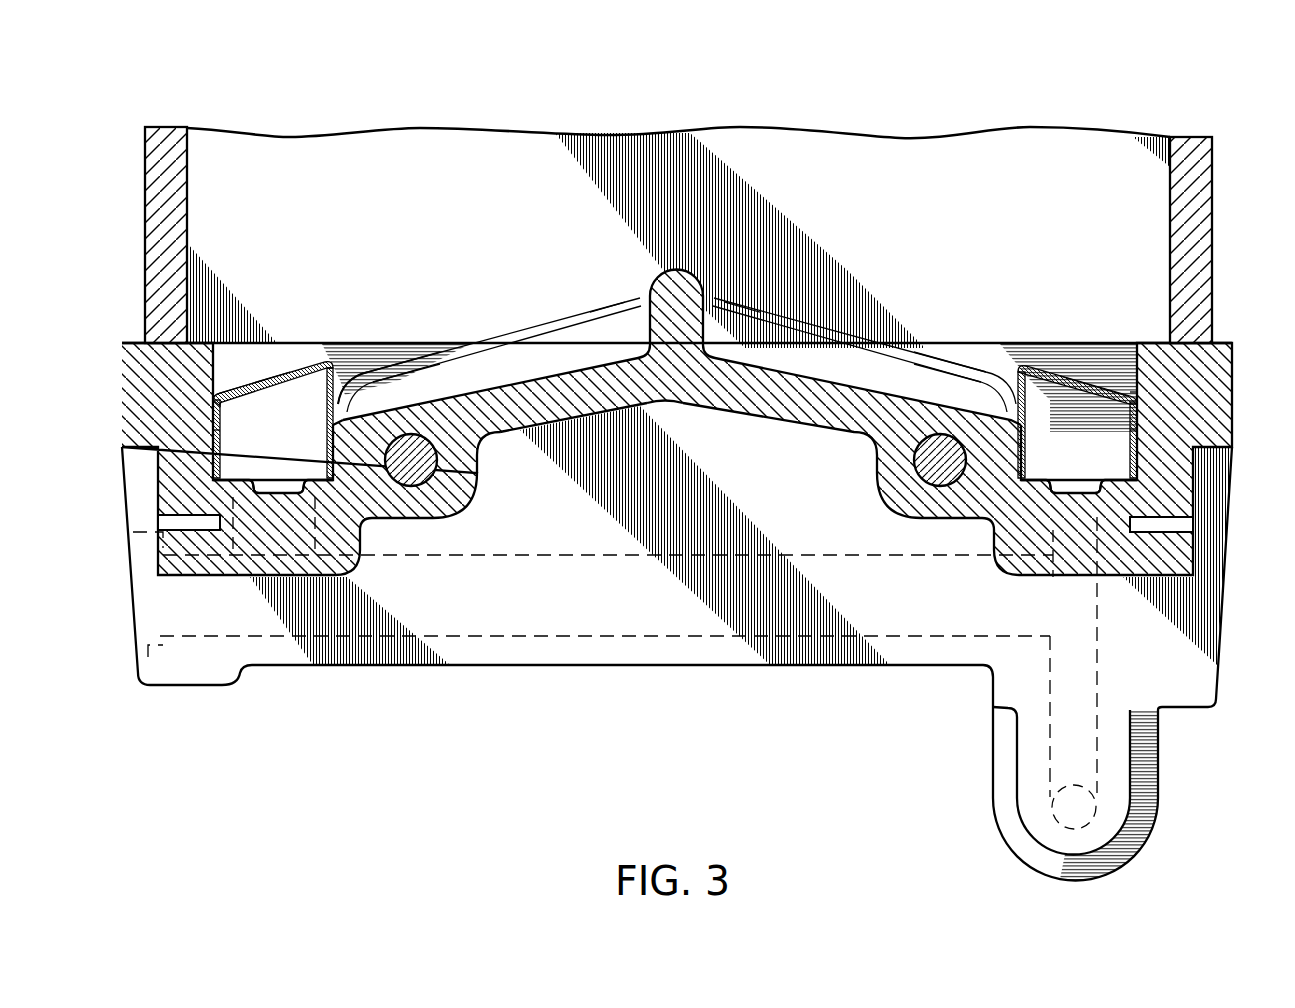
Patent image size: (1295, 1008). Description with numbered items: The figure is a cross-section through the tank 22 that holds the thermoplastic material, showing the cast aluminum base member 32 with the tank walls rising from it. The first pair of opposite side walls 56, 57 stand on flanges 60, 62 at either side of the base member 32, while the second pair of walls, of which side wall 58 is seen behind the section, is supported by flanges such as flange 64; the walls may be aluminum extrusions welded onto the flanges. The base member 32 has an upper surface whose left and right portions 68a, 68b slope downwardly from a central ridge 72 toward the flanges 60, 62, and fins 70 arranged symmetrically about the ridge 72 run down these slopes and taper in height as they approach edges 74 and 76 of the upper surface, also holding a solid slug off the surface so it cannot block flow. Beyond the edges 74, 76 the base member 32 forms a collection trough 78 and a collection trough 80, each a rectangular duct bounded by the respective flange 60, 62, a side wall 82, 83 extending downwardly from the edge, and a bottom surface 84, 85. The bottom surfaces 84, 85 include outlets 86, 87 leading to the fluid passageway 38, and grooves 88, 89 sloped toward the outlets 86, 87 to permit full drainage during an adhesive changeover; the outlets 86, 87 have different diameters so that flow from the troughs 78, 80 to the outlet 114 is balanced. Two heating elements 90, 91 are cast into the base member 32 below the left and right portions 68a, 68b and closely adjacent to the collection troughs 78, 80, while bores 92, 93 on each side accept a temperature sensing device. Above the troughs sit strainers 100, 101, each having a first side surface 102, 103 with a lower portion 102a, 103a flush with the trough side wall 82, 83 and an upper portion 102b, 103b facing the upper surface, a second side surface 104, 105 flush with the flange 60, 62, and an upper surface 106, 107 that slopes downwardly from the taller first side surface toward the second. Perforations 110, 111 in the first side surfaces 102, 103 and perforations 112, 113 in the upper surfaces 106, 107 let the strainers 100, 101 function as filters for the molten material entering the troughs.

The tank 22 is at (134, 70).
The base member 32 is at (177, 686).
The fluid passageway 38 is at (527, 552).
The side wall 56 is at (145, 182).
The side wall 57 is at (1213, 196).
The side wall 58 is at (382, 192).
The flange 60 is at (124, 343).
The flange 62 is at (1230, 343).
The flange 64 is at (1153, 343).
The left portion of upper surface 68a is at (562, 372).
The right portion of upper surface 68b is at (790, 372).
The fins 70 is at (612, 307).
The central ridge 72 is at (677, 268).
The edge of upper surface 74 is at (366, 392).
The edge of upper surface 76 is at (1000, 418).
The collection trough 78 is at (292, 416).
The collection trough 80 is at (1112, 419).
The side wall of collection trough 82 is at (320, 395).
The side wall of collection trough 83 is at (1055, 400).
The bottom surface 84 is at (240, 480).
The bottom surface 85 is at (1108, 493).
The outlet 86 is at (247, 530).
The outlet 87 is at (1060, 522).
The groove 88 is at (282, 493).
The groove 89 is at (1071, 493).
The heating element 90 is at (415, 458).
The heating element 91 is at (940, 462).
The bore 92 is at (192, 523).
The bore 93 is at (1163, 526).
The strainer 100 is at (238, 385).
The strainer 101 is at (1136, 392).
The first side surface 102 is at (362, 420).
The lower portion of first side surface 102a is at (398, 418).
The upper portion of first side surface 102b is at (345, 392).
The first side surface 103 is at (975, 415).
The lower portion of first side surface 103a is at (927, 410).
The upper portion of first side surface 103b is at (1018, 392).
The second side surface 104 is at (212, 437).
The second side surface 105 is at (1138, 426).
The upper surface of strainer 106 is at (250, 400).
The upper surface of strainer 107 is at (1112, 386).
The perforations 110 is at (326, 420).
The perforations 111 is at (1036, 405).
The perforations 112 is at (270, 400).
The perforations 113 is at (1085, 400).
The outlet 114 is at (1046, 812).